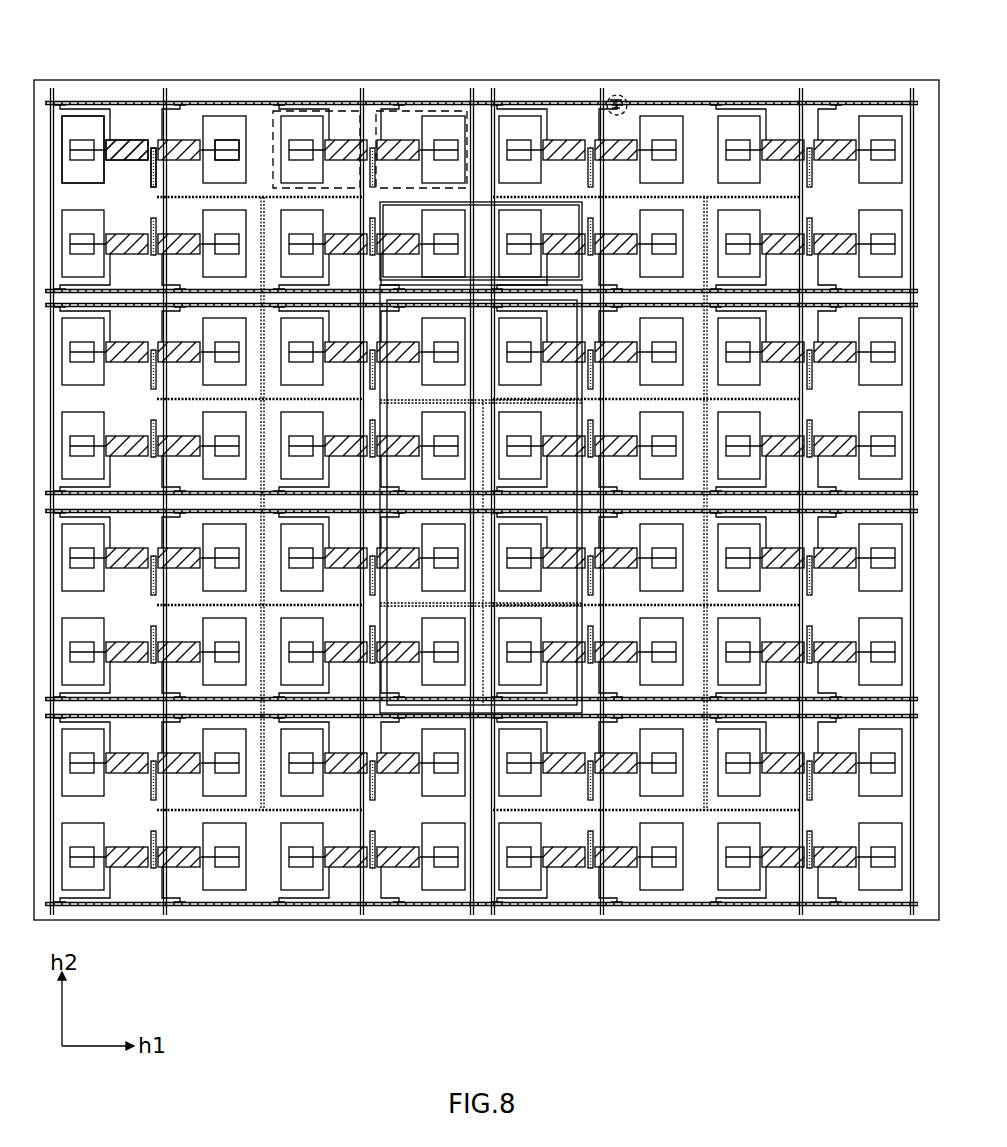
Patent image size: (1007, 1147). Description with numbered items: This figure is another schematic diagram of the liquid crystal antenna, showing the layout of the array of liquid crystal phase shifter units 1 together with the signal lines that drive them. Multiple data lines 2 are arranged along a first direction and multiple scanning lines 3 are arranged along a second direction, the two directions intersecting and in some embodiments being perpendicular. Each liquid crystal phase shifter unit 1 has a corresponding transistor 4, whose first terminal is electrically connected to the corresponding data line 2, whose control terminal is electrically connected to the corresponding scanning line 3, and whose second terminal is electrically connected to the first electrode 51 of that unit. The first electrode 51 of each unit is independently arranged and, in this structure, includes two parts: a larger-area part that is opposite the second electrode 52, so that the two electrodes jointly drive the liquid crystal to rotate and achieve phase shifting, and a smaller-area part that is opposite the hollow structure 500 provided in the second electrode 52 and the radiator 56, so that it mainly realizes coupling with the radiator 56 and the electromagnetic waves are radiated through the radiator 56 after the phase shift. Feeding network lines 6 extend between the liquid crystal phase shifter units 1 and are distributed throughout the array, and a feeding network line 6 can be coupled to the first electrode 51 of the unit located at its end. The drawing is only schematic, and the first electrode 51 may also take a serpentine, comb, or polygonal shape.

The liquid crystal phase shifter unit 1 is at (405, 110).
The data line 2 is at (493, 100).
The scanning line 3 is at (703, 100).
The transistor 4 is at (612, 98).
The feeding network line 6 is at (262, 195).
The first electrode 51 is at (126, 143).
The second electrode 52 is at (153, 93).
The radiator 56 is at (85, 128).
The hollow structure 500 is at (228, 146).